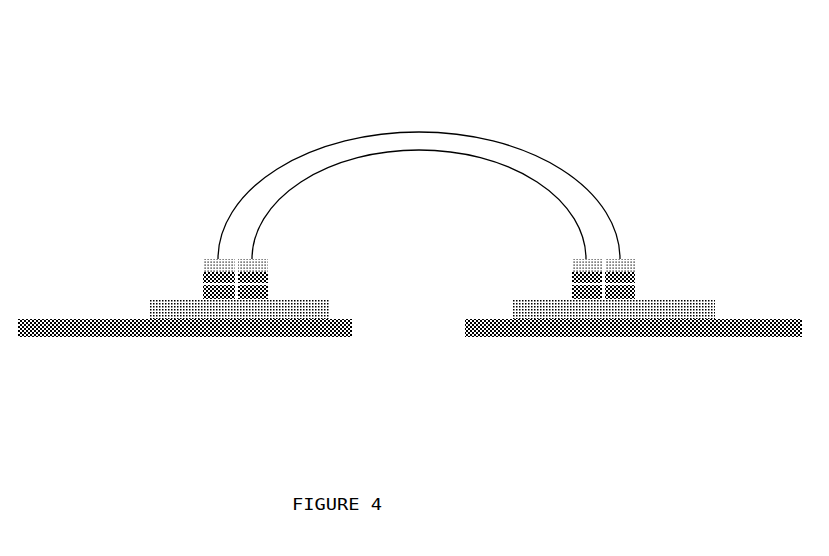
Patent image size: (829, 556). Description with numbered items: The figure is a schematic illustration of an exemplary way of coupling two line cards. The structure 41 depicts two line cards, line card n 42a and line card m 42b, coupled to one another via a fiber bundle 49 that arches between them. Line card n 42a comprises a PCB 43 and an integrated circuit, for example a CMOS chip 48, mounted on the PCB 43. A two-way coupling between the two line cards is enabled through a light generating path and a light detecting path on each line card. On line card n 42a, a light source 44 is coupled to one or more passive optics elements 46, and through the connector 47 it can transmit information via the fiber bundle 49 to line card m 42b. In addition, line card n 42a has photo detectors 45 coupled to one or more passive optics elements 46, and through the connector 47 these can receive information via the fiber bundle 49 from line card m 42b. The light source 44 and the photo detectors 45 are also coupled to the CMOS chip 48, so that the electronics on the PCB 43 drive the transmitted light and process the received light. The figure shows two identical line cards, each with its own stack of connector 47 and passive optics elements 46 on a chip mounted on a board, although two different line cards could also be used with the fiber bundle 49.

The structure 41 is at (488, 102).
The line card n 42a is at (324, 292).
The line card m 42b is at (633, 336).
The PCB 43 is at (107, 326).
The light source 44 is at (200, 292).
The photo detectors 45 is at (271, 293).
The passive optics elements 46 is at (346, 235).
The connector 47 is at (204, 256).
The CMOS chip 48 is at (253, 314).
The fiber bundle 49 is at (291, 155).